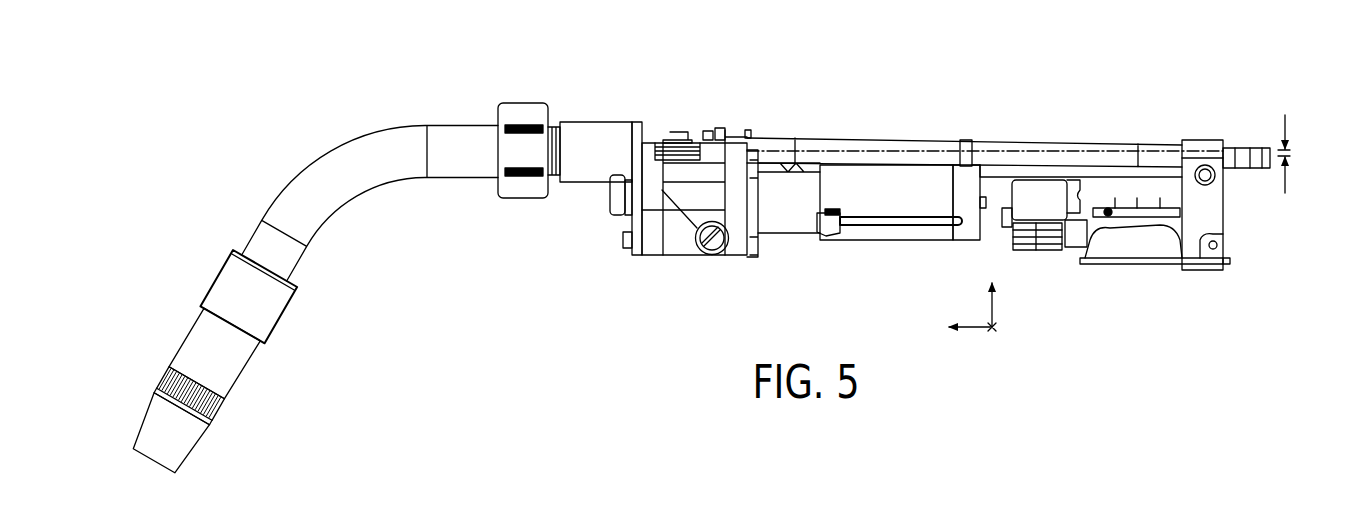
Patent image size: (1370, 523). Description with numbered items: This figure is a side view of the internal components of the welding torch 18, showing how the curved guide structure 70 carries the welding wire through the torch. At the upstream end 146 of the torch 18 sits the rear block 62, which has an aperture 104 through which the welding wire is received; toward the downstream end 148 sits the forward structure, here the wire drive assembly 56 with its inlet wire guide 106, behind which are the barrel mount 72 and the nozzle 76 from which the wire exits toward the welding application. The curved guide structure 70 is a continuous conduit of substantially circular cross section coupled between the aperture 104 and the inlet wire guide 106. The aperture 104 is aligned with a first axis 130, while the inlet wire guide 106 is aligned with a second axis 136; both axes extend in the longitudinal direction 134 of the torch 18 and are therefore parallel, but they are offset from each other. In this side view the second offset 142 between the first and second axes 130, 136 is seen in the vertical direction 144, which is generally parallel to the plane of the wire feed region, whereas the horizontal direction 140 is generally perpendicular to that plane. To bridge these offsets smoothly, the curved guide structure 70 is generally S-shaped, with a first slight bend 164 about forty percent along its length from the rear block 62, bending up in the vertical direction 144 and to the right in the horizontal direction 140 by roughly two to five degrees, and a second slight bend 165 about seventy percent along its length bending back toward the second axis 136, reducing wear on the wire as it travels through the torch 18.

The welding torch 18 is at (617, 283).
The wire drive assembly 56 is at (717, 190).
The rear block 62 is at (1195, 220).
The curved guide structure 70 is at (815, 138).
The barrel mount 72 is at (597, 122).
The nozzle 76 is at (302, 172).
The aperture 104 is at (1225, 173).
The inlet wire guide 106 is at (745, 137).
The first axis 130 is at (1285, 193).
The longitudinal direction 134 is at (990, 328).
The second axis 136 is at (1015, 151).
The horizontal direction 140 is at (992, 330).
The second offset 142 is at (1285, 115).
The vertical direction 144 is at (993, 310).
The upstream end 146 is at (1205, 130).
The downstream end 148 is at (574, 94).
The first slight bend 164 is at (1078, 138).
The second slight bend 165 is at (908, 135).